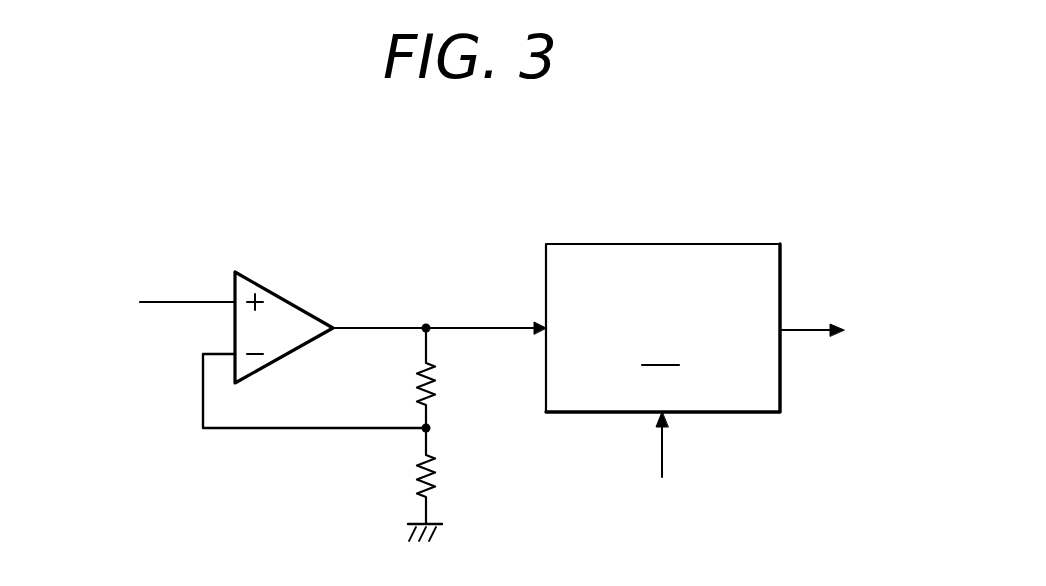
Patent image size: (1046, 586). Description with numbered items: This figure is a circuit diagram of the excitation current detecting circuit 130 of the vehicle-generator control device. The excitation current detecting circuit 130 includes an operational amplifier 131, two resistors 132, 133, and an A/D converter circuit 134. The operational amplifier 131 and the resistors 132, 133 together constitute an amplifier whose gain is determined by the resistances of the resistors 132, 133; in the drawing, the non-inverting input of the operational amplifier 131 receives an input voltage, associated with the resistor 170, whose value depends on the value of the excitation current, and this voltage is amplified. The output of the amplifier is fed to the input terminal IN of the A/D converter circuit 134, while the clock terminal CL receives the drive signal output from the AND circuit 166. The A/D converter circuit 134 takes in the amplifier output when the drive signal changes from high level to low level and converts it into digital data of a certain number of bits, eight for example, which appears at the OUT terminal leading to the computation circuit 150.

The excitation current detecting circuit 130 is at (503, 209).
The operational amplifier 131 is at (285, 296).
The resistor 132 is at (436, 385).
The resistor 133 is at (436, 478).
The A/D converter circuit 134 is at (702, 243).
The computation circuit 150 is at (836, 333).
The AND circuit 166 is at (661, 466).
The resistor 170 is at (161, 302).